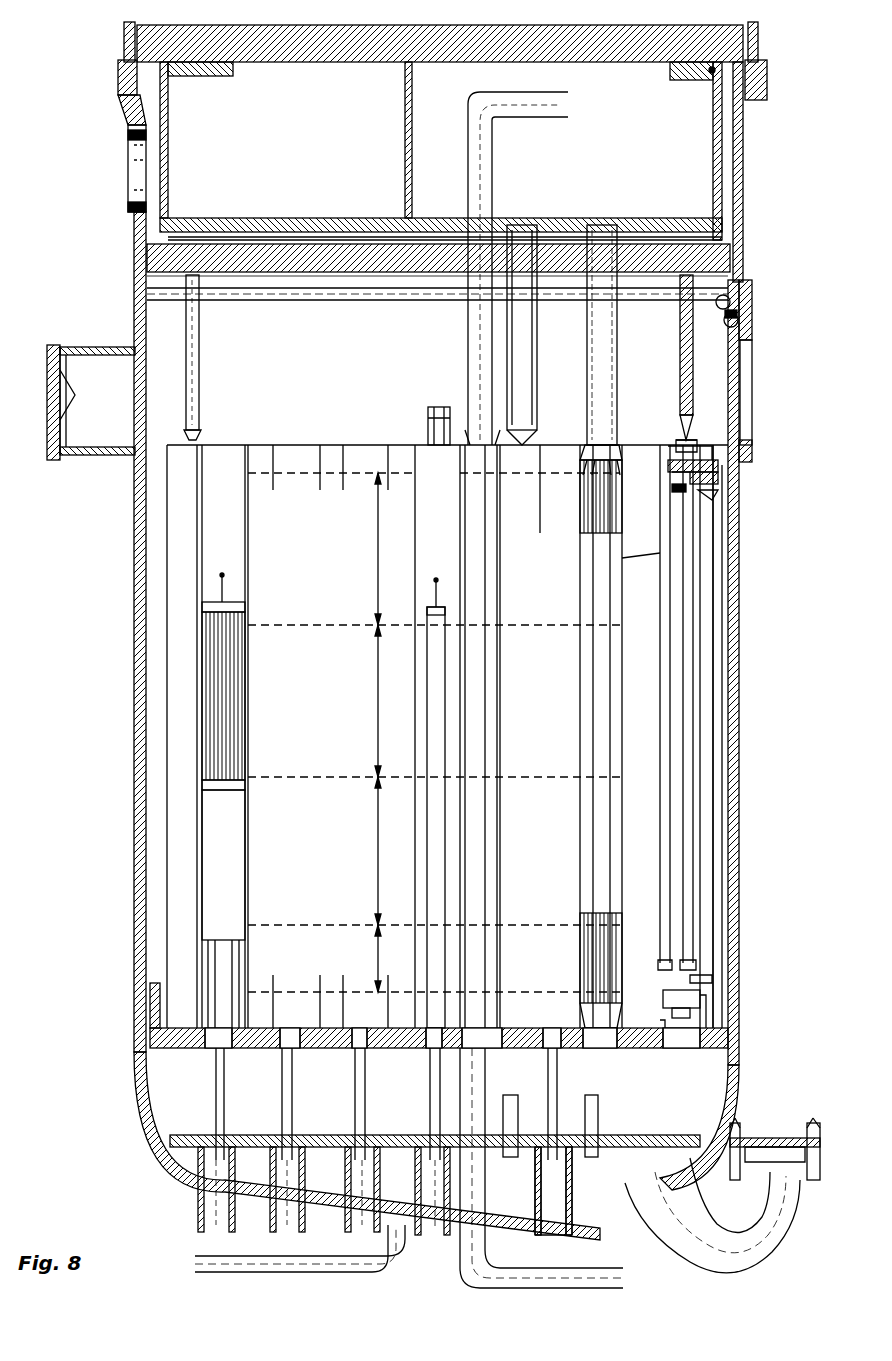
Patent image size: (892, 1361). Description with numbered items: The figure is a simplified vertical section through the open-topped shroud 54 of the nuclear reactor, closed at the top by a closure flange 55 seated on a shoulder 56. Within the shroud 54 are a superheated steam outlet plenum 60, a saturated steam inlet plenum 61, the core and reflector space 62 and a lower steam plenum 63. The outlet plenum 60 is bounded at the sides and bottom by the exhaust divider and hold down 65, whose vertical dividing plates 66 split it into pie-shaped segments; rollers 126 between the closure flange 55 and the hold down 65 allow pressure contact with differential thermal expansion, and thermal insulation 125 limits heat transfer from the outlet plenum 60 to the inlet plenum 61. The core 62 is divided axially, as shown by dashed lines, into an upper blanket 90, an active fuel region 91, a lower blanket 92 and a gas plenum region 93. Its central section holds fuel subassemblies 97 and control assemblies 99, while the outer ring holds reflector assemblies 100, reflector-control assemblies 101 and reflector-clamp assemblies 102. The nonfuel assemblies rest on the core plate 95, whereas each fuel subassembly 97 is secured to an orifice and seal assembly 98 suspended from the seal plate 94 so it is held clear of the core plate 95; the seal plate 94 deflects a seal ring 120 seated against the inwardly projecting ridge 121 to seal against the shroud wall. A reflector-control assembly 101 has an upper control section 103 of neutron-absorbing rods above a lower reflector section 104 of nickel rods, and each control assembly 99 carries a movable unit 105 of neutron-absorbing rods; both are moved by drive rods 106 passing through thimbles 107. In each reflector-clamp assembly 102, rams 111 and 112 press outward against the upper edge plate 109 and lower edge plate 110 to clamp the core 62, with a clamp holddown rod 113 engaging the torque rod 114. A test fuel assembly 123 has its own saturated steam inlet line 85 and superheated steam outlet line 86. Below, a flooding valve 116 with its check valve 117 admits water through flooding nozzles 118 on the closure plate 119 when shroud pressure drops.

The shroud 54 is at (740, 634).
The closure flange 55 is at (733, 34).
The shoulder 56 is at (768, 97).
The superheated steam outlet plenum 60 is at (300, 142).
The saturated steam inlet plenum 61 is at (322, 378).
The core and reflector space 62 is at (545, 658).
The lower steam plenum 63 is at (328, 1104).
The exhaust divider and hold down 65 is at (743, 160).
The vertical dividing plates 66 is at (405, 155).
The individual saturated steam inlet line 85 is at (555, 1268).
The superheated steam outlet line 86 is at (495, 150).
The upper blanket 90 is at (434, 535).
The active fuel region 91 is at (434, 701).
The lower blanket 92 is at (434, 851).
The gas plenum region 93 is at (434, 976).
The seal plate 94 is at (745, 270).
The core plate 95 is at (740, 1030).
The fuel subassemblies 97 is at (742, 540).
The orifice and seal assembly 98 is at (587, 360).
The control assemblies 99 is at (415, 637).
The reflector assemblies 100 is at (636, 445).
The reflector-control assemblies 101 is at (197, 722).
The reflector-clamp assemblies 102 is at (712, 752).
The upper control section 103 is at (240, 672).
The lower reflector section 104 is at (245, 845).
The unit of neutron-absorbing rods 105 is at (445, 685).
The drive rods 106 is at (292, 1096).
The thimbles 107 is at (198, 1205).
The upper edge plate 109 is at (730, 476).
The lower edge plate 110 is at (706, 1002).
The ram 111 is at (712, 462).
The ram 112 is at (700, 985).
The clamp holddown rod 113 is at (202, 352).
The torque rod 114 is at (686, 692).
The flooding valve 116 is at (800, 1218).
The check valve 117 is at (778, 1150).
The flooding nozzles 118 is at (600, 1112).
The closure plate 119 is at (188, 1135).
The seal ring 120 is at (735, 305).
The ridge 121 is at (740, 330).
The test fuel assembly 123 is at (497, 860).
The thermal insulation 125 is at (745, 240).
The rollers 126 is at (712, 80).